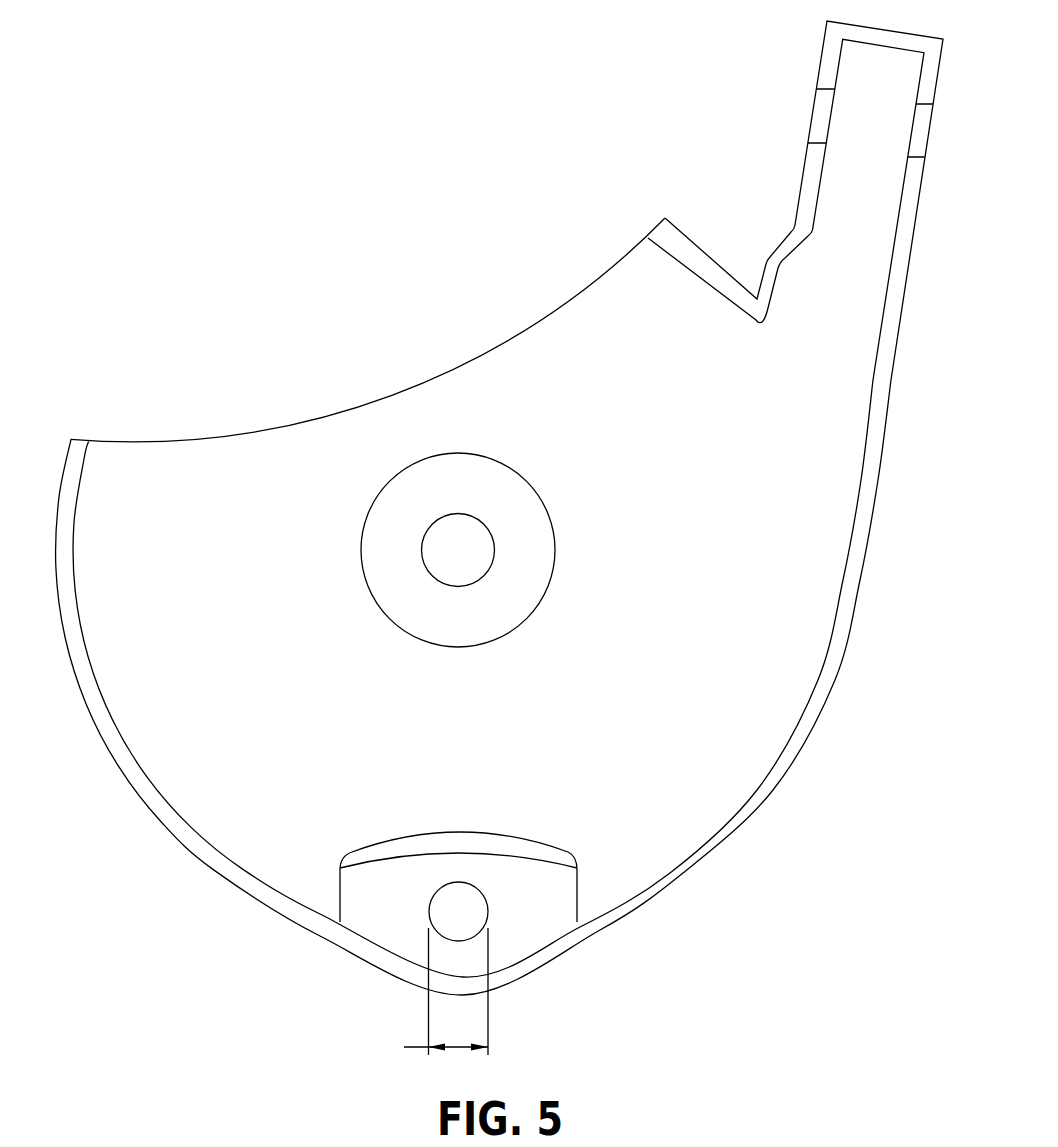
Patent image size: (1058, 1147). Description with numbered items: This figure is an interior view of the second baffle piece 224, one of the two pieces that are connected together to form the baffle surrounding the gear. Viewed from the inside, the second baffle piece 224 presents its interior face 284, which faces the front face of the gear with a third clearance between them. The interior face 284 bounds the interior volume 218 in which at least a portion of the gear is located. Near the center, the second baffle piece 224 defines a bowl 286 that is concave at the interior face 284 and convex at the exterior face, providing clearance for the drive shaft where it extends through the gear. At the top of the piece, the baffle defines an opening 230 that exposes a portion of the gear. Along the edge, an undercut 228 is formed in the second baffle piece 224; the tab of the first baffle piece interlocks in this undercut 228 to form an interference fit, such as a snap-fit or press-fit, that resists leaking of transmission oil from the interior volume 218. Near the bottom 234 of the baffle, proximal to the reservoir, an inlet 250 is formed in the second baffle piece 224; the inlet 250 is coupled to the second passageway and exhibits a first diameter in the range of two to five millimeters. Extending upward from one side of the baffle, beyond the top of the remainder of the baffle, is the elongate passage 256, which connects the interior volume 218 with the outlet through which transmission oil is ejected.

The interior volume 218 is at (740, 785).
The second baffle piece 224 is at (565, 300).
The undercut 228 is at (680, 242).
The opening 230 is at (499, 547).
The bottom 234 is at (503, 994).
The inlet 250 is at (458, 912).
The elongate passage 256 is at (856, 188).
The interior face 284 is at (478, 757).
The bowl 286 is at (395, 510).